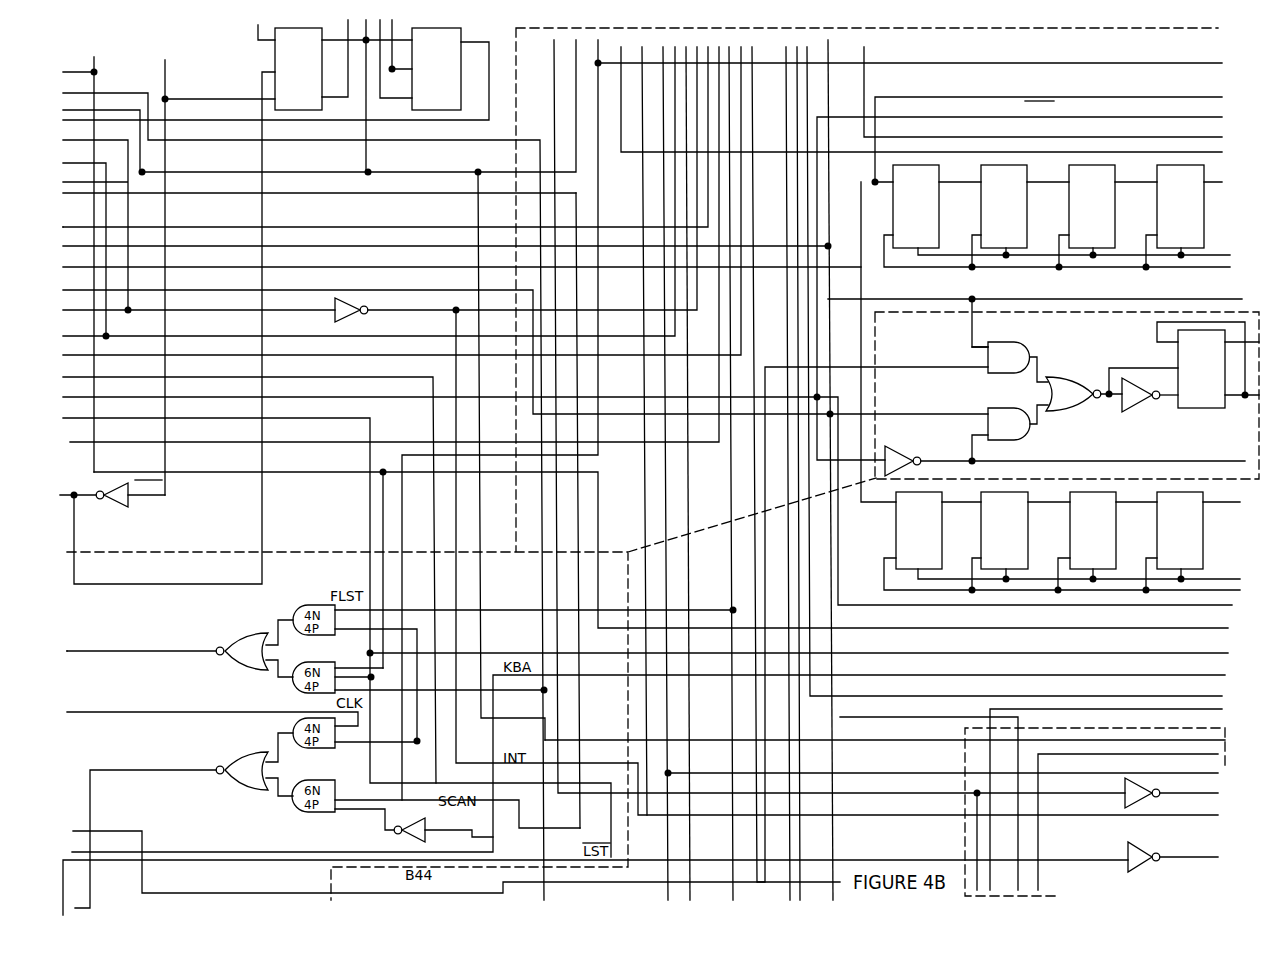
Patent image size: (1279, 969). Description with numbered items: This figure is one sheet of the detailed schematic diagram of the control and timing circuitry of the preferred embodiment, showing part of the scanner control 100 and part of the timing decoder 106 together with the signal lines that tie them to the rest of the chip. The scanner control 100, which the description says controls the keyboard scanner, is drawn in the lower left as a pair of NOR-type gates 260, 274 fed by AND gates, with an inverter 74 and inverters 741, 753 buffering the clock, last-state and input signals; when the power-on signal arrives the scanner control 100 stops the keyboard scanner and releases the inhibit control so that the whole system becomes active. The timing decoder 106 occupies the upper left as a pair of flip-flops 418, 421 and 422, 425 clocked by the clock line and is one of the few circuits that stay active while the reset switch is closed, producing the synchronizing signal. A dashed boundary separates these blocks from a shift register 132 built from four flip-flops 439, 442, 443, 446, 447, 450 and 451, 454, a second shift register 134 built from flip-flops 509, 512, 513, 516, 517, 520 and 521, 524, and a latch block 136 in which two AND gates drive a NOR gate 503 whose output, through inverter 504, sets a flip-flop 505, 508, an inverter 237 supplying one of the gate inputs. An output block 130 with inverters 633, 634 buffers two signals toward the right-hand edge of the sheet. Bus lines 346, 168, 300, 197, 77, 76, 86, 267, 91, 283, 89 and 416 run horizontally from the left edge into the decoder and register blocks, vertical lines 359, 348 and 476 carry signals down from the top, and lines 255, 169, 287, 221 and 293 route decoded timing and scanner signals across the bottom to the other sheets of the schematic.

The scanner control 100 is at (114, 634).
The timing decoder 106 is at (235, 213).
The output inverter block 130 is at (1145, 823).
The shift register 132 is at (1052, 199).
The shift register 134 is at (1062, 573).
The latch logic block 136 is at (1072, 399).
The flip-flop A1 418 is at (298, 73).
The flip-flop A1 421 is at (298, 69).
The flip-flop A 422 is at (391, 59).
The flip-flop A 425 is at (436, 69).
The flip-flop 439 is at (916, 208).
The flip-flop 442 is at (916, 208).
The flip-flop 443 is at (1004, 208).
The flip-flop 446 is at (1004, 208).
The flip-flop 447 is at (1092, 208).
The flip-flop 450 is at (1092, 208).
The flip-flop 451 is at (1180, 208).
The flip-flop 454 is at (1180, 208).
The flip-flop B 505 is at (1208, 376).
The flip-flop B 508 is at (1201, 369).
The flip-flop 509 is at (919, 532).
The flip-flop 512 is at (919, 532).
The flip-flop 513 is at (1004, 532).
The flip-flop 516 is at (1004, 532).
The flip-flop 517 is at (1093, 532).
The flip-flop 520 is at (1093, 532).
The flip-flop 521 is at (1180, 532).
The flip-flop 524 is at (1180, 532).
The inverter 741 is at (516, 189).
The inverter 753 is at (157, 529).
The NOR gate 260 is at (167, 650).
The NOR gate 274 is at (171, 830).
The inverter 74 is at (418, 828).
The inverter 237 is at (1065, 455).
The NOR gate 503 is at (1112, 394).
The inverter 504 is at (1150, 396).
The inverter 633 is at (1145, 855).
The inverter 634 is at (1171, 791).
The signal line 346 is at (385, 137).
The signal line 168 is at (652, 287).
The signal line 300 is at (462, 258).
The signal line 197 is at (525, 342).
The signal line 77 is at (199, 300).
The signal line 76 is at (369, 191).
The signal line 86 is at (402, 201).
The signal line 267 is at (249, 570).
The signal line 91 is at (647, 491).
The signal line 283 is at (337, 628).
The signal line 89 is at (394, 244).
The signal line 416 is at (661, 559).
The signal line 359 is at (797, 420).
The signal line 348 is at (921, 409).
The signal line 476 is at (633, 431).
The signal line 255 is at (798, 645).
The signal line 169 is at (885, 730).
The signal line 287 is at (901, 473).
The signal line 221 is at (839, 465).
The signal line 293 is at (680, 473).